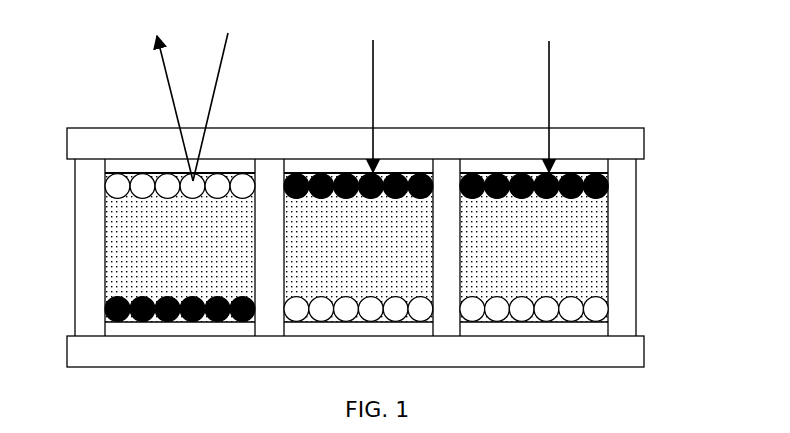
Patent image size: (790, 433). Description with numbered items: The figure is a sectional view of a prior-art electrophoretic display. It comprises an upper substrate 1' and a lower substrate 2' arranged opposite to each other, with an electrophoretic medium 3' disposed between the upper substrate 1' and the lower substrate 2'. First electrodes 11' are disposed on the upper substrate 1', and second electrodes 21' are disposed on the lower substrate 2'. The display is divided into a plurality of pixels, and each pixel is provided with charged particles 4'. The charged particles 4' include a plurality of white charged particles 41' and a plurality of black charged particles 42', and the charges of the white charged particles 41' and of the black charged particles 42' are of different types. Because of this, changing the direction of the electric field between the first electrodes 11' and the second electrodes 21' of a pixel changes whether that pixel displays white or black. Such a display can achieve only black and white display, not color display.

The upper substrate 1' is at (380, 143).
The first electrode 11' is at (404, 164).
The lower substrate 2' is at (379, 353).
The second electrode 21' is at (404, 330).
The electrophoretic medium 3' is at (317, 247).
The charged particle 4' is at (421, 248).
The white charged particle 41' is at (404, 307).
The black charged particle 42' is at (404, 188).